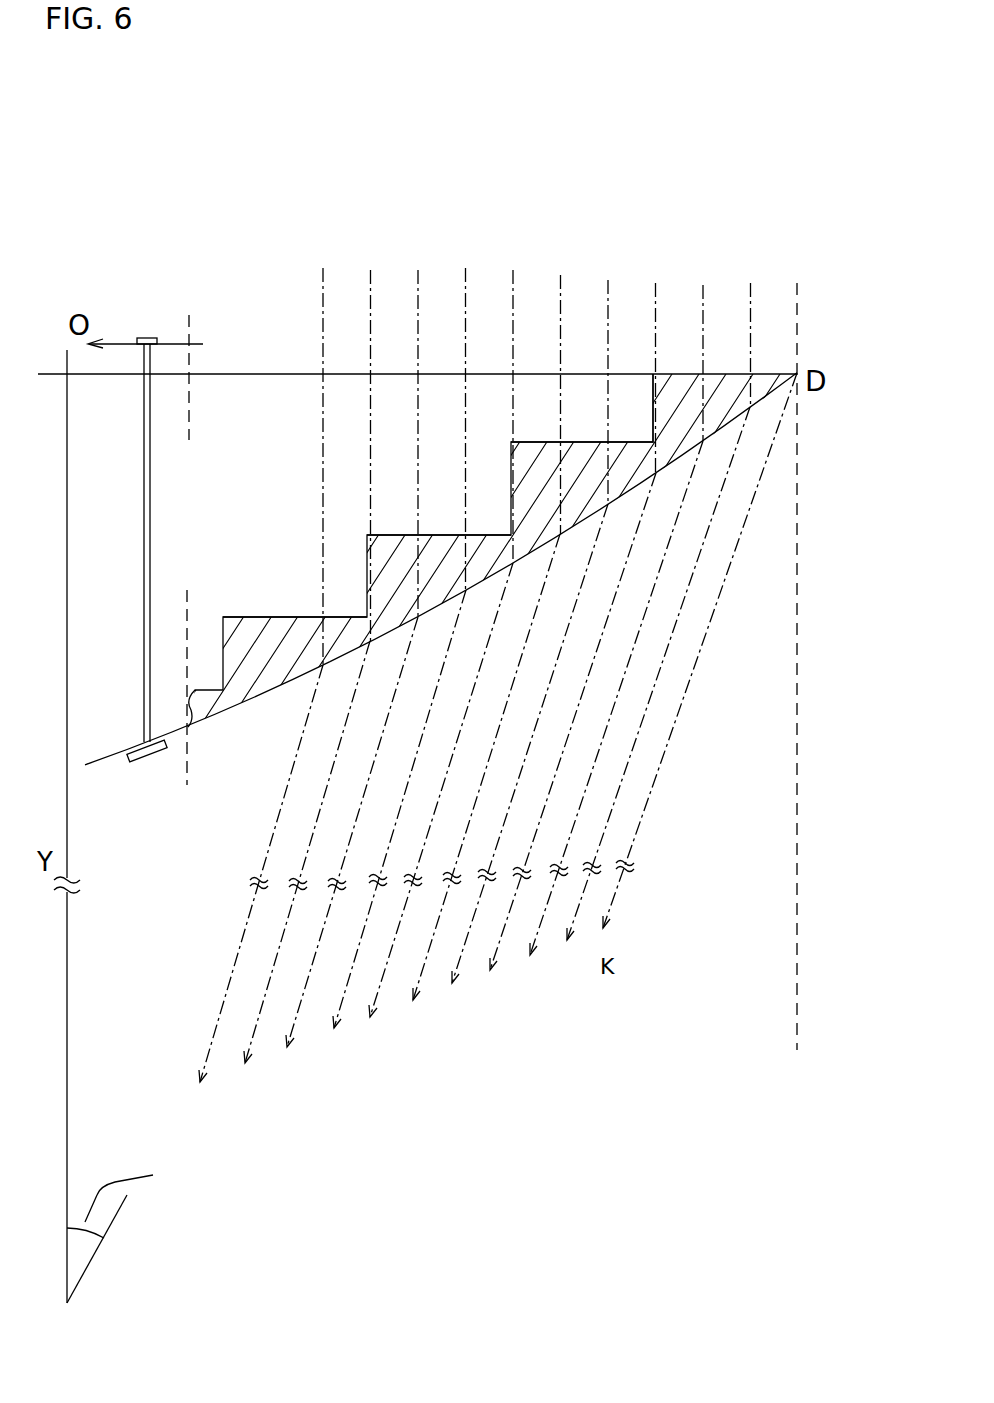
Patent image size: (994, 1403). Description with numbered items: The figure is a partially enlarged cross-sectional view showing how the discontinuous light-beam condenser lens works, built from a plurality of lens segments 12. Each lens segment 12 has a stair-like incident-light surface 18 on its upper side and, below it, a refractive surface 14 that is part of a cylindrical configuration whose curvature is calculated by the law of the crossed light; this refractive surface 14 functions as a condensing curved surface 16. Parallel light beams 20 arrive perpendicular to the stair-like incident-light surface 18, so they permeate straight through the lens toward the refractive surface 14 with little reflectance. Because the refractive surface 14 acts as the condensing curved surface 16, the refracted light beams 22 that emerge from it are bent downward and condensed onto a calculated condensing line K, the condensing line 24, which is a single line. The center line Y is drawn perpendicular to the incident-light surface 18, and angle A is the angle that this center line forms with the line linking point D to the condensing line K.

The lens segment 12 is at (808, 352).
The refractive surface 14 is at (702, 442).
The condensing curved surface 16 is at (255, 703).
The stair-like incident-light surface 18 is at (383, 533).
The parallel light beams 20 is at (465, 283).
The refracted light beams 22 is at (662, 770).
The condensing line 24 is at (113, 1245).